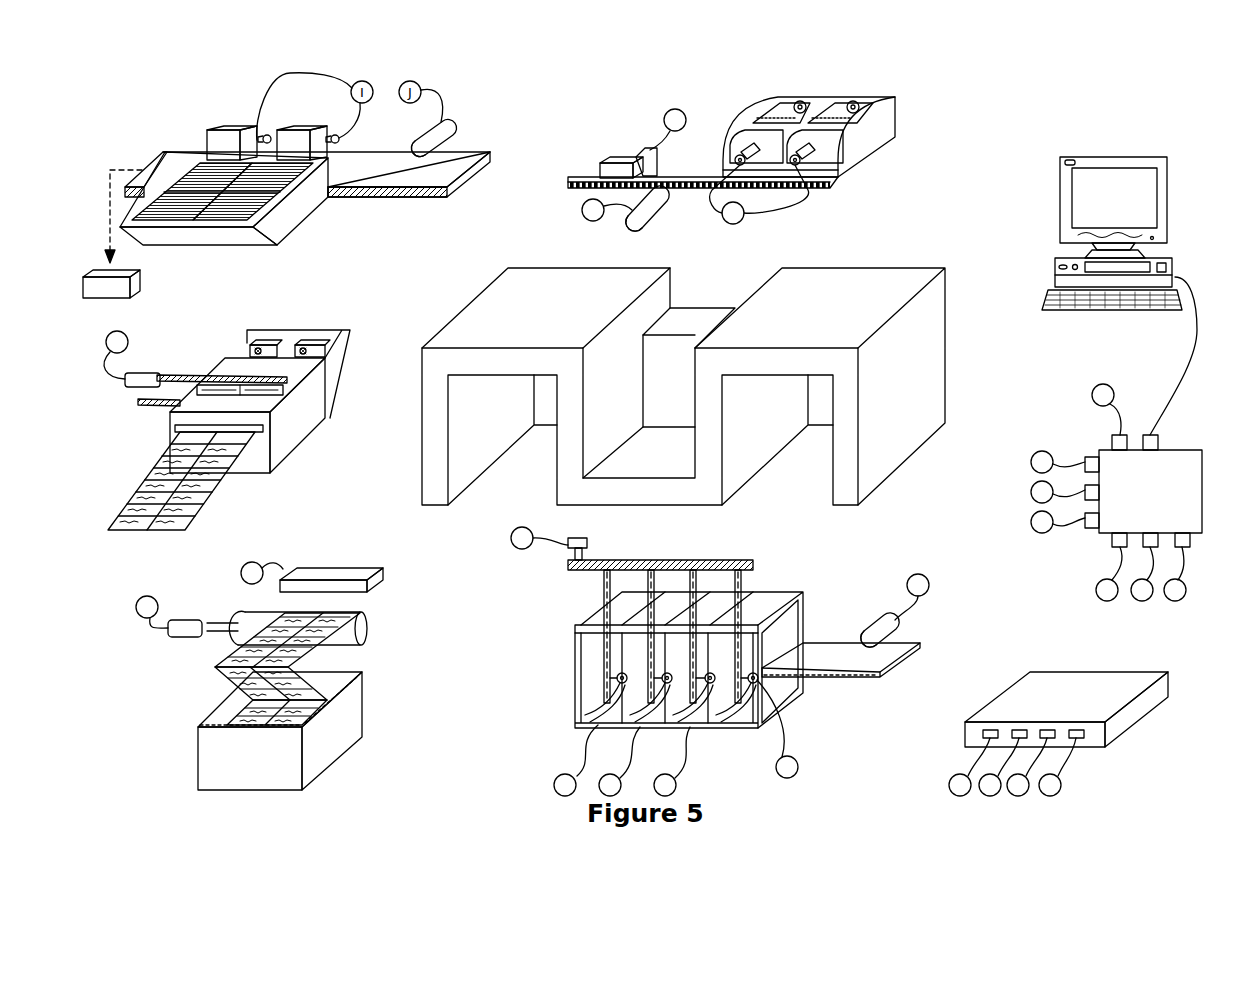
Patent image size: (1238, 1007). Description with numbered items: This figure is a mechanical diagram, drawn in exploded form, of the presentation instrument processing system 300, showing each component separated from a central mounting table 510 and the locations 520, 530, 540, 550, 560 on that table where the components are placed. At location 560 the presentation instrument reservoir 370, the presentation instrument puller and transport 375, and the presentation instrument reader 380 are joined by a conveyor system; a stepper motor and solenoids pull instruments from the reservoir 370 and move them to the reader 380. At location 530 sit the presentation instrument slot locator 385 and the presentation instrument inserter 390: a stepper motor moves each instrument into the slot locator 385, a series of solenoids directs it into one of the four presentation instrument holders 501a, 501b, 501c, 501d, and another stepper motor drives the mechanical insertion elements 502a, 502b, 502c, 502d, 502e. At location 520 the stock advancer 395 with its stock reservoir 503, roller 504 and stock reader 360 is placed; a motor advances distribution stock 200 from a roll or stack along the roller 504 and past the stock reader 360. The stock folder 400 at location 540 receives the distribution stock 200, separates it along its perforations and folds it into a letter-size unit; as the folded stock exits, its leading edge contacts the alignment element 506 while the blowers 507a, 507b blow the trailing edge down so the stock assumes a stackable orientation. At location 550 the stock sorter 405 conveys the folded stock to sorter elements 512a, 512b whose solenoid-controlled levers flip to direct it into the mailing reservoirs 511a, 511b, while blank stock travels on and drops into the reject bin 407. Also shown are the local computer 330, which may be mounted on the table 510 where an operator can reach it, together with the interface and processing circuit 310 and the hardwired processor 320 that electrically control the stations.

The distribution stock 200 is at (208, 488).
The presentation instrument processing system 300 is at (998, 125).
The interface and processing circuit 310 is at (1184, 501).
The hardwired processor 320 is at (1079, 708).
The local computer 330 is at (1131, 203).
The stock reader 360 is at (378, 567).
The presentation instrument reservoir 370 is at (777, 103).
The presentation instrument puller and transport 375 is at (720, 94).
The presentation instrument reader 380 is at (640, 150).
The presentation instrument slot locator 385 is at (674, 661).
The presentation instrument inserter 390 is at (745, 592).
The stock advancer 395 is at (168, 742).
The stock folder 400 is at (249, 383).
The stock sorter 405 is at (238, 200).
The reject bin 407 is at (138, 279).
The presentation instrument holder 501a is at (620, 693).
The presentation instrument holder 501b is at (665, 693).
The presentation instrument holder 501c is at (708, 693).
The presentation instrument holder 501d is at (752, 693).
The mechanical insertion element 502a is at (637, 560).
The mechanical insertion element 502b is at (602, 587).
The mechanical insertion element 502c is at (638, 597).
The mechanical insertion element 502d is at (632, 632).
The mechanical insertion element 502e is at (747, 603).
The stock reservoir 503 is at (342, 733).
The roller 504 is at (366, 632).
The alignment element 506 is at (337, 388).
The blower 507a is at (250, 347).
The blower 507b is at (297, 347).
The central mounting table 510 is at (875, 460).
The mailing reservoir 511a is at (214, 185).
The mailing reservoir 511b is at (273, 187).
The sorter element 512a is at (310, 127).
The sorter element 512b is at (223, 127).
The location 520 is at (642, 460).
The location 530 is at (632, 368).
The location 540 is at (713, 317).
The location 550 is at (510, 318).
The location 560 is at (825, 307).